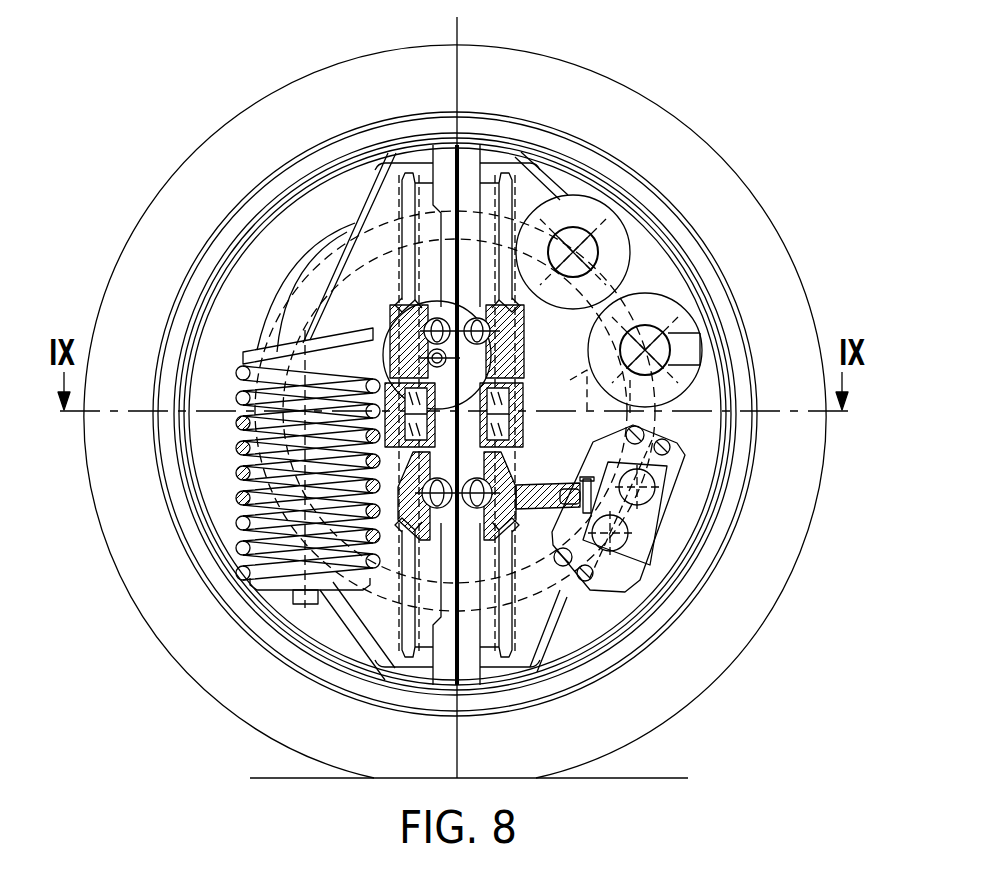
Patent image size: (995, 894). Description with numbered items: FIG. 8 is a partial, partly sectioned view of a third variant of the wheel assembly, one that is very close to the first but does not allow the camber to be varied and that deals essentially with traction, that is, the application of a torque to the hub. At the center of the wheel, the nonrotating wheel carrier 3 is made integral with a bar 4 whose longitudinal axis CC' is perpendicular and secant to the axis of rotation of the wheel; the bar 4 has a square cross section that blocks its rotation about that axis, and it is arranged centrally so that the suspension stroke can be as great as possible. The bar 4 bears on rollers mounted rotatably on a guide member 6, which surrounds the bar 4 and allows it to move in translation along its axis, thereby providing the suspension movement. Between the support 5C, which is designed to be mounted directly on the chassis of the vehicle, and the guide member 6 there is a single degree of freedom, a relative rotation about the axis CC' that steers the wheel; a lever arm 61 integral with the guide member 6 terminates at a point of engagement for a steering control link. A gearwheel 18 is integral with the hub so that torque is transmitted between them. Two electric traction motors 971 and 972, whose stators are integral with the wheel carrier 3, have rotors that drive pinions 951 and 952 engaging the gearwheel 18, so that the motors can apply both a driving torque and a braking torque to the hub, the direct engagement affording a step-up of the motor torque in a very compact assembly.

The wheel carrier 3 is at (540, 185).
The bar 4 is at (460, 153).
The gearwheel 18 is at (477, 177).
The guide member 6 is at (398, 325).
The support 5C is at (525, 405).
The lever arm 61 is at (552, 485).
The electric motor 971 is at (590, 210).
The pinion 951 is at (600, 240).
The electric motor 972 is at (690, 333).
The pinion 952 is at (668, 352).